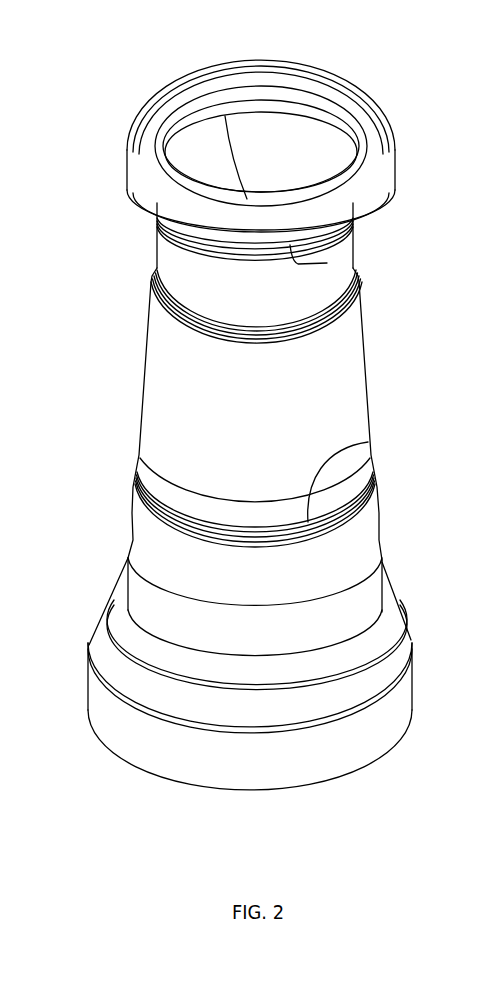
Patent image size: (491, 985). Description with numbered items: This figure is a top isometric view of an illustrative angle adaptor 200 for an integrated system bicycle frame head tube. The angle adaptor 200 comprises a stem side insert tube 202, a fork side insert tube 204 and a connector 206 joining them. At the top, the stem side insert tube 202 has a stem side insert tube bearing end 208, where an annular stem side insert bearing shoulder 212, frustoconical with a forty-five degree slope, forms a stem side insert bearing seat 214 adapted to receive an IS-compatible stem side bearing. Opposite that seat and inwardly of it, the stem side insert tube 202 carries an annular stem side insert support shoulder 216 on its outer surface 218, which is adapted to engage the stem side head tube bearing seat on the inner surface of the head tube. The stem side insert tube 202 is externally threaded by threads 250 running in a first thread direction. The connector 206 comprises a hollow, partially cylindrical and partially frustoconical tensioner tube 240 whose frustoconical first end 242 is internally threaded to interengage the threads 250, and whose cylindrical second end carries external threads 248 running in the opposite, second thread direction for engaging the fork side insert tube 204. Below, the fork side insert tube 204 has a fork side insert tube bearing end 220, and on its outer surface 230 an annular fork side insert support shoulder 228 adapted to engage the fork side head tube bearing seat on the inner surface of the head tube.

The angle adaptor 200 is at (62, 229).
The stem side insert tube 202 is at (152, 247).
The fork side insert tube 204 is at (114, 579).
The connector 206 is at (142, 373).
The stem side insert tube bearing end 208 is at (368, 77).
The stem side insert bearing shoulder 212 is at (288, 99).
The stem side insert bearing seat 214 is at (234, 94).
The stem side insert support shoulder 216 is at (327, 263).
The outer surface 218 is at (275, 309).
The fork side insert tube bearing end 220 is at (129, 767).
The fork side insert support shoulder 228 is at (390, 587).
The outer surface 230 is at (264, 652).
The tensioner tube 240 is at (147, 337).
The first end 242 is at (150, 268).
The threads 248 is at (368, 442).
The threads 250 is at (268, 340).